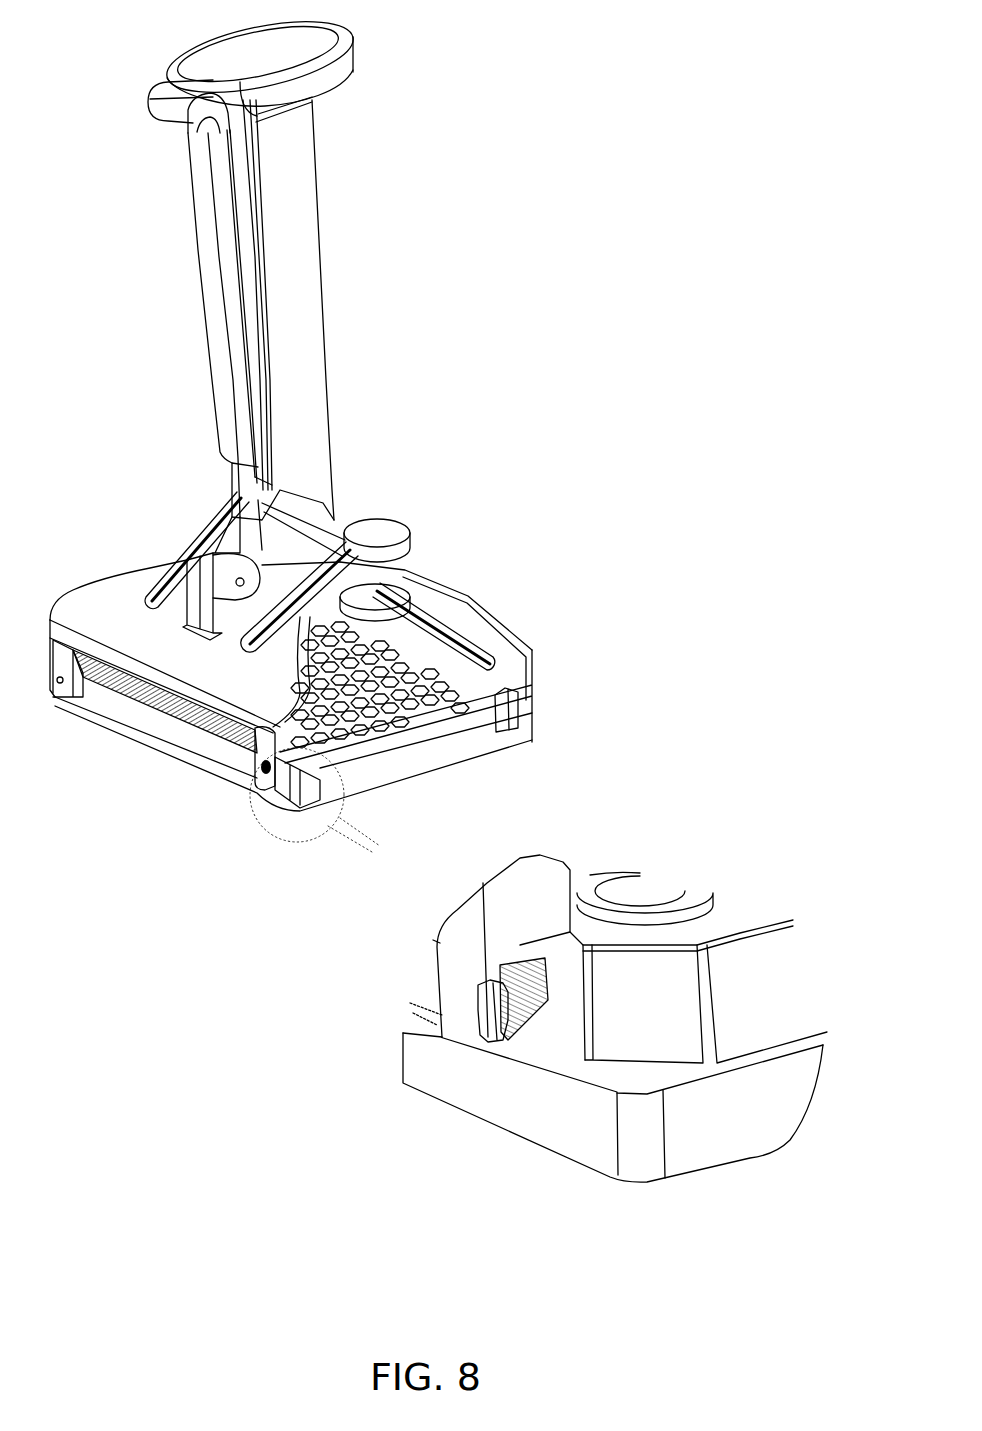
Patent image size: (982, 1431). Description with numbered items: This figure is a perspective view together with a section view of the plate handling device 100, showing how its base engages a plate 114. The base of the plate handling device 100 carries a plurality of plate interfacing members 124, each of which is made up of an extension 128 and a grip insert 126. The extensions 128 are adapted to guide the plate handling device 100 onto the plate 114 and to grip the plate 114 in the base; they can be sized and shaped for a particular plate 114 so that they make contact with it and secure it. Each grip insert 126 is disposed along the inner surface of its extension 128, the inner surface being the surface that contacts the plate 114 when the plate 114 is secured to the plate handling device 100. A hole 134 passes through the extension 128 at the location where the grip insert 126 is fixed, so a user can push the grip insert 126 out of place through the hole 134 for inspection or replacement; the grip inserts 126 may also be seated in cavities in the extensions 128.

The plate handling device 100 is at (497, 257).
The plate 114 is at (441, 901).
The plate interfacing member 124 is at (265, 752).
The grip insert 126 is at (534, 1013).
The extension 128 is at (465, 955).
The hole 134 is at (489, 1010).